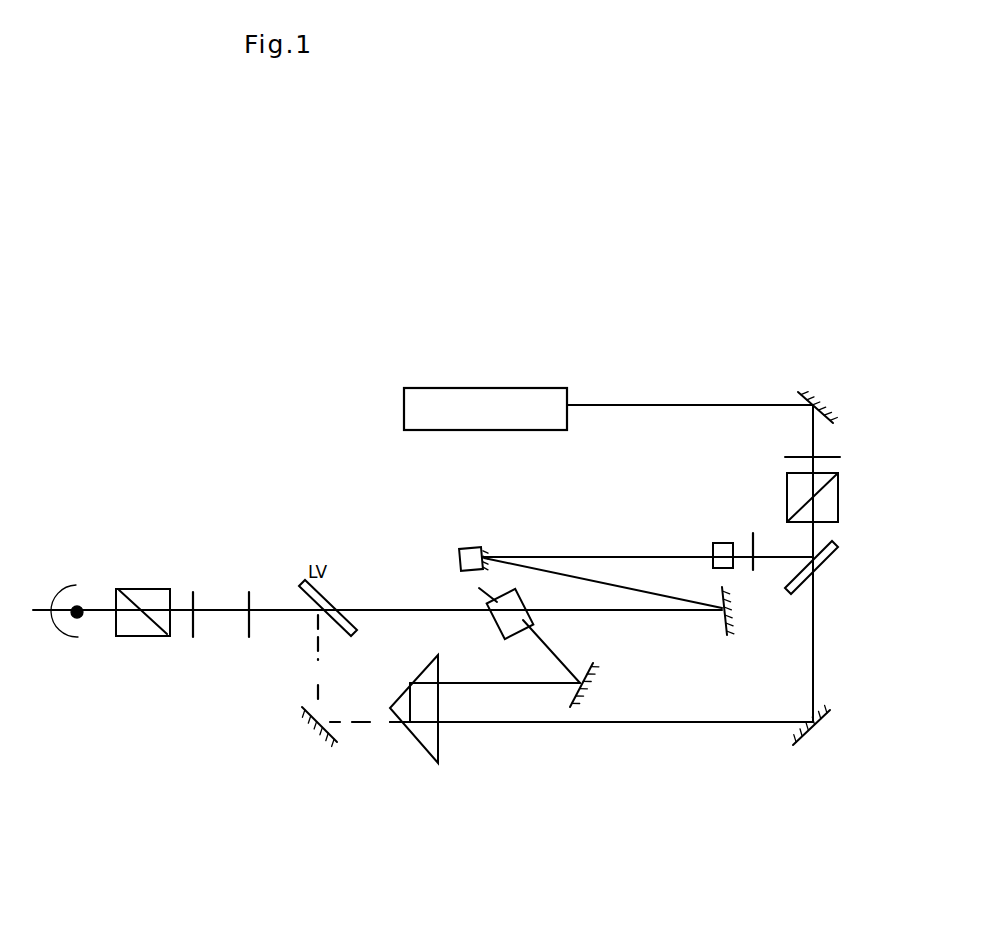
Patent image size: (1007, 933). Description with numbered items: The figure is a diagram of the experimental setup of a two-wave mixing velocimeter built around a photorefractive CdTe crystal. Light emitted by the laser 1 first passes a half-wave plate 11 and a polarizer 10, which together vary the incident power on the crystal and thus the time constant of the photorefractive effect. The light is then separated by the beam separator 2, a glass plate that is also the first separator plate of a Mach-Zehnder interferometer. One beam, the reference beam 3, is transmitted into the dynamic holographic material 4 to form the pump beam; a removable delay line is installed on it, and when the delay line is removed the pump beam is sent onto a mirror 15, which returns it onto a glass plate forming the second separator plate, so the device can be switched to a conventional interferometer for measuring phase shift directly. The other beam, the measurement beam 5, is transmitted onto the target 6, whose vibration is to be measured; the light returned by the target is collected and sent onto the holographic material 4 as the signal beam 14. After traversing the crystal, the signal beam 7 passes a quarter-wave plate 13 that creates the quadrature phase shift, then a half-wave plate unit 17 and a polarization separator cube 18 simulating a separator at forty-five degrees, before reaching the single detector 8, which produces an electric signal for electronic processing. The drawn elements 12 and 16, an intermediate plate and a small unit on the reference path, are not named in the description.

The laser 1 is at (517, 400).
The beam separator 2 is at (838, 545).
The reference beam 3 is at (814, 610).
The dynamic holographic material 4 is at (522, 616).
The measurement beam 5 is at (693, 555).
The target 6 is at (464, 548).
The signal beam 7 is at (396, 612).
The detector 8 is at (68, 592).
The polarizer 10 is at (826, 477).
The half-wave plate 11 is at (817, 457).
The plate 12 is at (751, 572).
The quarter-wave plate 13 is at (250, 600).
The signal beam 14 is at (601, 584).
The mirror 15 is at (305, 718).
The modulator 16 is at (731, 543).
The half-wave plate unit 17 is at (194, 598).
The polarization separator cube 18 is at (122, 590).